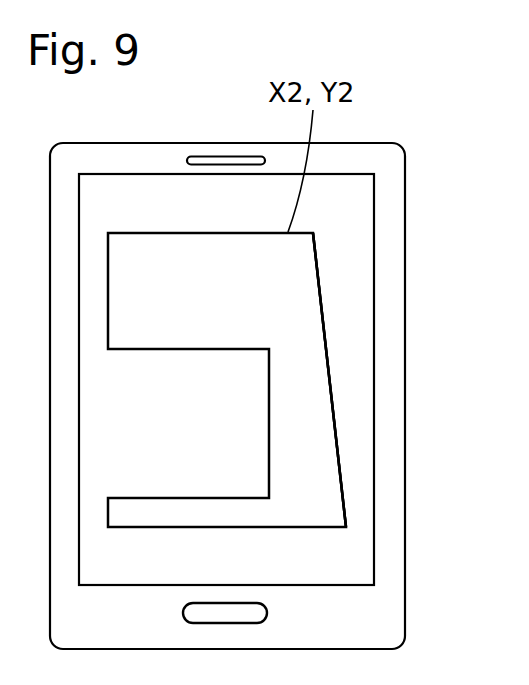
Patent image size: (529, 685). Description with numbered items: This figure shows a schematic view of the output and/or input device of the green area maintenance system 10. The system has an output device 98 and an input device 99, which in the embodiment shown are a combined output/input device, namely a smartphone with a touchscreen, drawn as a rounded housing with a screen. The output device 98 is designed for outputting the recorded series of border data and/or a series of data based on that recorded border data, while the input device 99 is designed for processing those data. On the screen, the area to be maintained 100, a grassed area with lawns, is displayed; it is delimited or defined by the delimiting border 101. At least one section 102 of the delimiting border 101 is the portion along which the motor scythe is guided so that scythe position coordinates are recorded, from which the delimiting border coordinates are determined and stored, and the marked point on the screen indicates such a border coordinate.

The green area maintenance system 10 is at (398, 133).
The output device 98 is at (405, 219).
The input device 99 is at (405, 277).
The area to be maintained 100 is at (332, 405).
The delimiting border 101 is at (339, 467).
The section of the delimiting border 102 is at (330, 368).